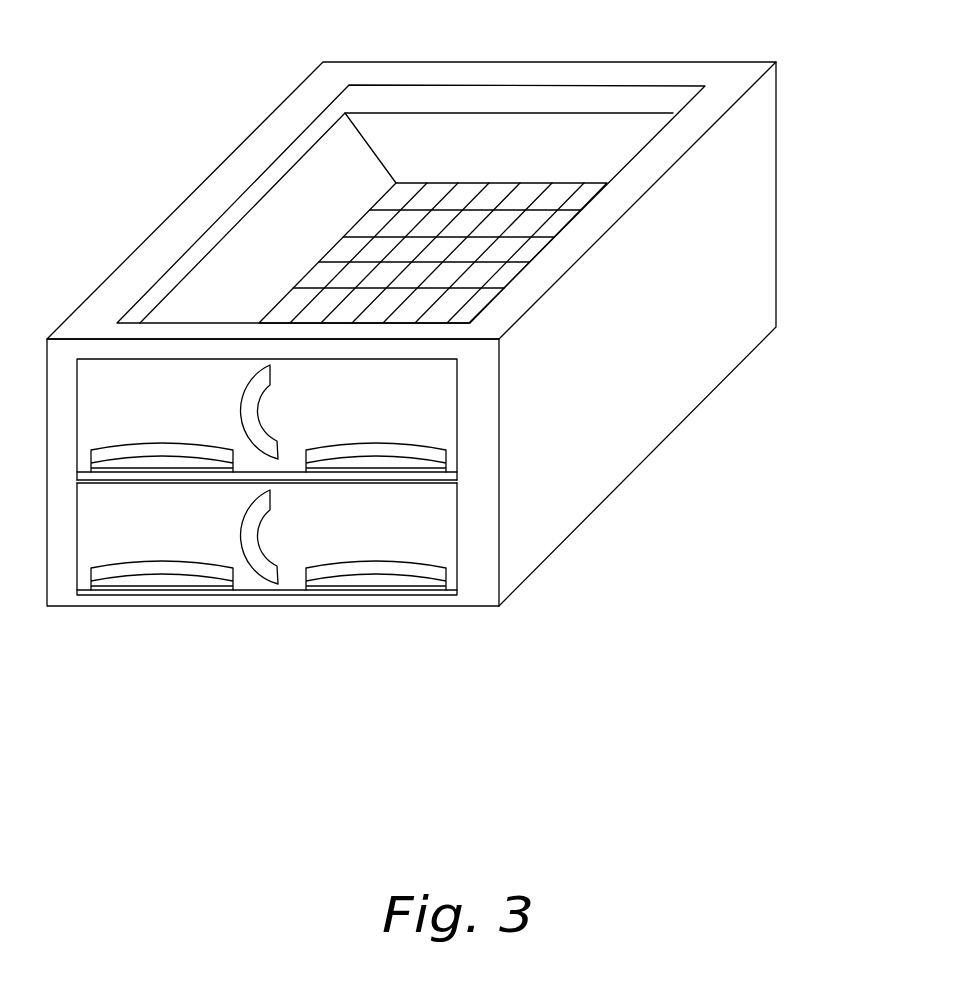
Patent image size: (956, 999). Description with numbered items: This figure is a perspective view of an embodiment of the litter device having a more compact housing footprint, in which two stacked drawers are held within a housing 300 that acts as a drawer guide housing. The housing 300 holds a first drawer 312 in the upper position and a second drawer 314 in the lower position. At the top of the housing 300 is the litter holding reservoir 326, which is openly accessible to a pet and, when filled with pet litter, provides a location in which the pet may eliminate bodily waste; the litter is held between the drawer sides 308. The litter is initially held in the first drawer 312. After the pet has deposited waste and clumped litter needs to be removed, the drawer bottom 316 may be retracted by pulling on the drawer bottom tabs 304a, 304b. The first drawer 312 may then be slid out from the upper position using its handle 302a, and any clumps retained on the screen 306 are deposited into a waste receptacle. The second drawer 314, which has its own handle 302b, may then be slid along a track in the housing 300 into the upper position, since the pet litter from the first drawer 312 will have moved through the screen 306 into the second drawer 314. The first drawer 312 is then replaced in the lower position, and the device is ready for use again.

The housing 300 is at (775, 243).
The handle 302a is at (255, 422).
The handle 302b is at (255, 546).
The drawer bottom tab 304a is at (112, 447).
The drawer bottom tab 304b is at (371, 444).
The screen 306 is at (535, 235).
The drawer sides 308 is at (568, 137).
The first drawer 312 is at (440, 417).
The second drawer 314 is at (440, 547).
The drawer bottom 316 is at (247, 467).
The litter holding reservoir 326 is at (419, 128).